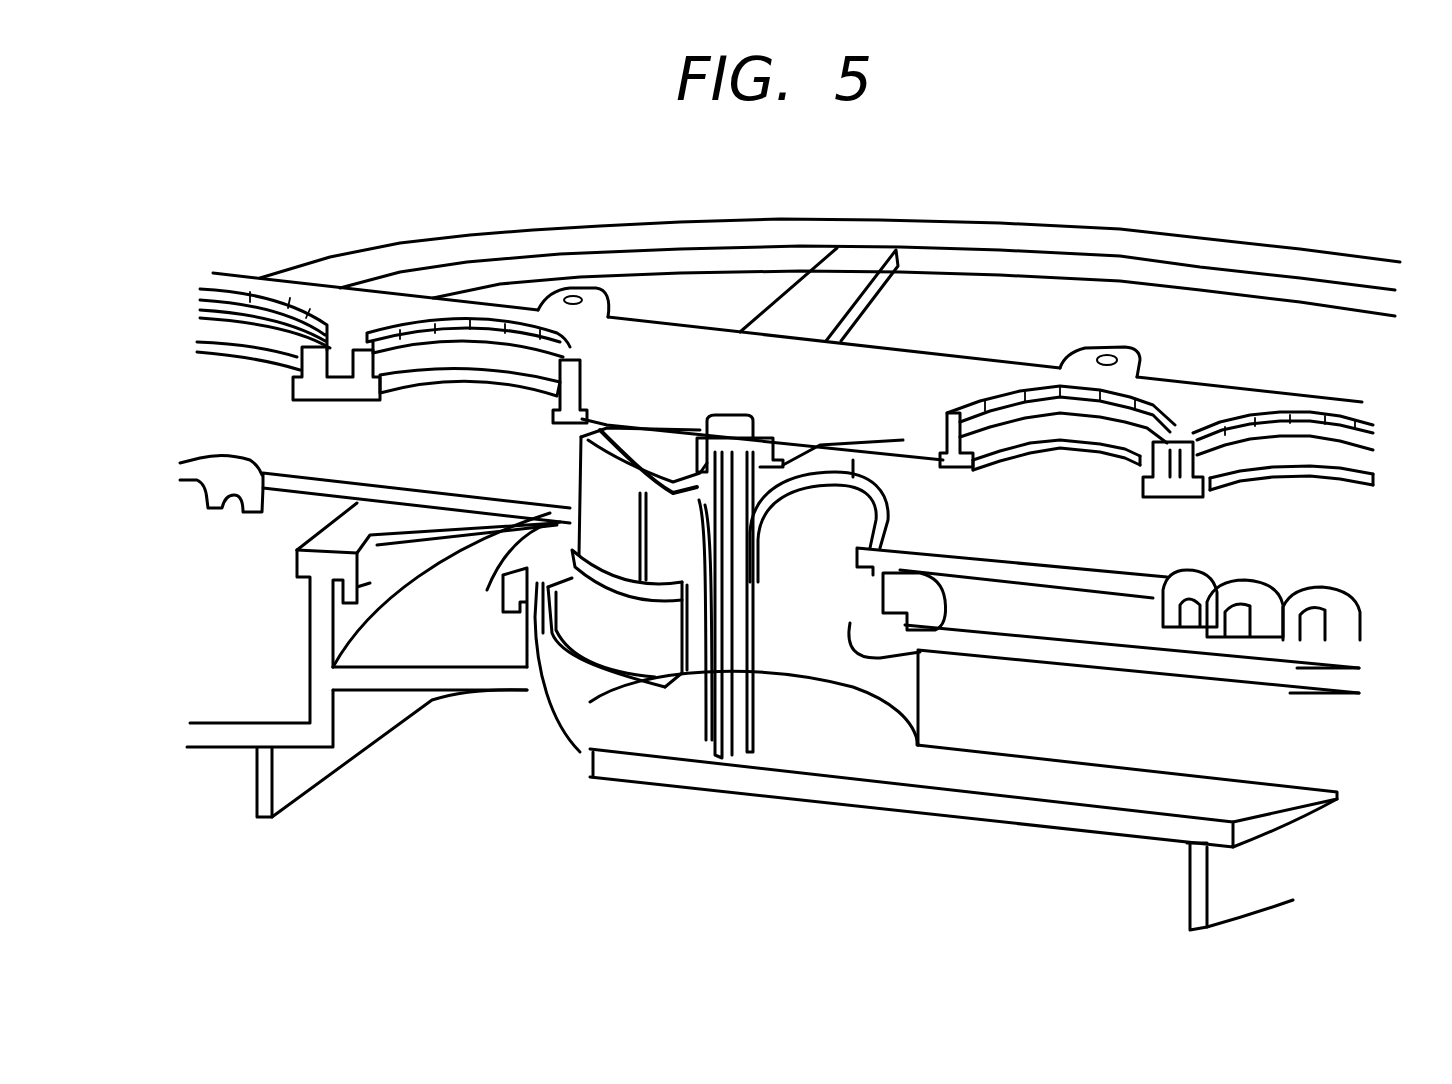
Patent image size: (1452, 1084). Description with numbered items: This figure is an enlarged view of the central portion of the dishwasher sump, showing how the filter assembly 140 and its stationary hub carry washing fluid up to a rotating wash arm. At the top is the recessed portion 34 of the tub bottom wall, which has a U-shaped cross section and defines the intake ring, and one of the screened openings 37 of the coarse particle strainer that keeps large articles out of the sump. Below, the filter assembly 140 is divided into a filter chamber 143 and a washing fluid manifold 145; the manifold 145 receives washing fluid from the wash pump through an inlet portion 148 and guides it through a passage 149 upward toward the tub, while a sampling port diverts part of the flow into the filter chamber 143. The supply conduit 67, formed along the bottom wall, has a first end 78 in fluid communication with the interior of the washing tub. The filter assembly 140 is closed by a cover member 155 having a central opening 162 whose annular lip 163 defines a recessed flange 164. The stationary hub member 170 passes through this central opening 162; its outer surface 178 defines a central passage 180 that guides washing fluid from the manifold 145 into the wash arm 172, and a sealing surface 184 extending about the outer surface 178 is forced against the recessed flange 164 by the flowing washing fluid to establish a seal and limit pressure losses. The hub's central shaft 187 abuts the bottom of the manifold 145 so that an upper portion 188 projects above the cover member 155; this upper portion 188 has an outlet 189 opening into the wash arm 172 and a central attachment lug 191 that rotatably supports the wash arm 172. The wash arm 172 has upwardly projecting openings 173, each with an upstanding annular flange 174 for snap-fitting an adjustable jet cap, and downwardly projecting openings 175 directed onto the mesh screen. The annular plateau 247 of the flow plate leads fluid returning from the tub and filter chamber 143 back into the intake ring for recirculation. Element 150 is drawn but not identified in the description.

The recessed portion 34 is at (478, 232).
The opening 37 is at (880, 278).
The wash arm 172 is at (900, 375).
The upstanding annular flange 174 is at (580, 378).
The attachment lug 191 is at (732, 425).
The upwardly projecting openings 173 is at (405, 375).
The upper portion 188 is at (580, 490).
The outlet 189 is at (646, 505).
The downwardly projecting openings 175 is at (230, 505).
The annular lip 163 is at (520, 552).
The central passage 180 is at (826, 552).
The recessed flange 164 is at (945, 633).
The outer surface 178 is at (657, 628).
The filter assembly 140 is at (276, 623).
The central opening 162 is at (855, 625).
The sealing surface 184 is at (648, 684).
The central shaft 187 is at (760, 712).
The lower rail face 150 is at (918, 703).
The cover member 155 is at (1300, 650).
The filter chamber 143 is at (417, 650).
The annular plateau 247 is at (262, 708).
The first end 78 is at (575, 748).
The stationary hub member 170 is at (593, 676).
The wash fluid supply conduit 67 is at (767, 793).
The washing fluid manifold 145 is at (860, 750).
The passage 149 is at (1013, 775).
The inlet portion 148 is at (1290, 817).